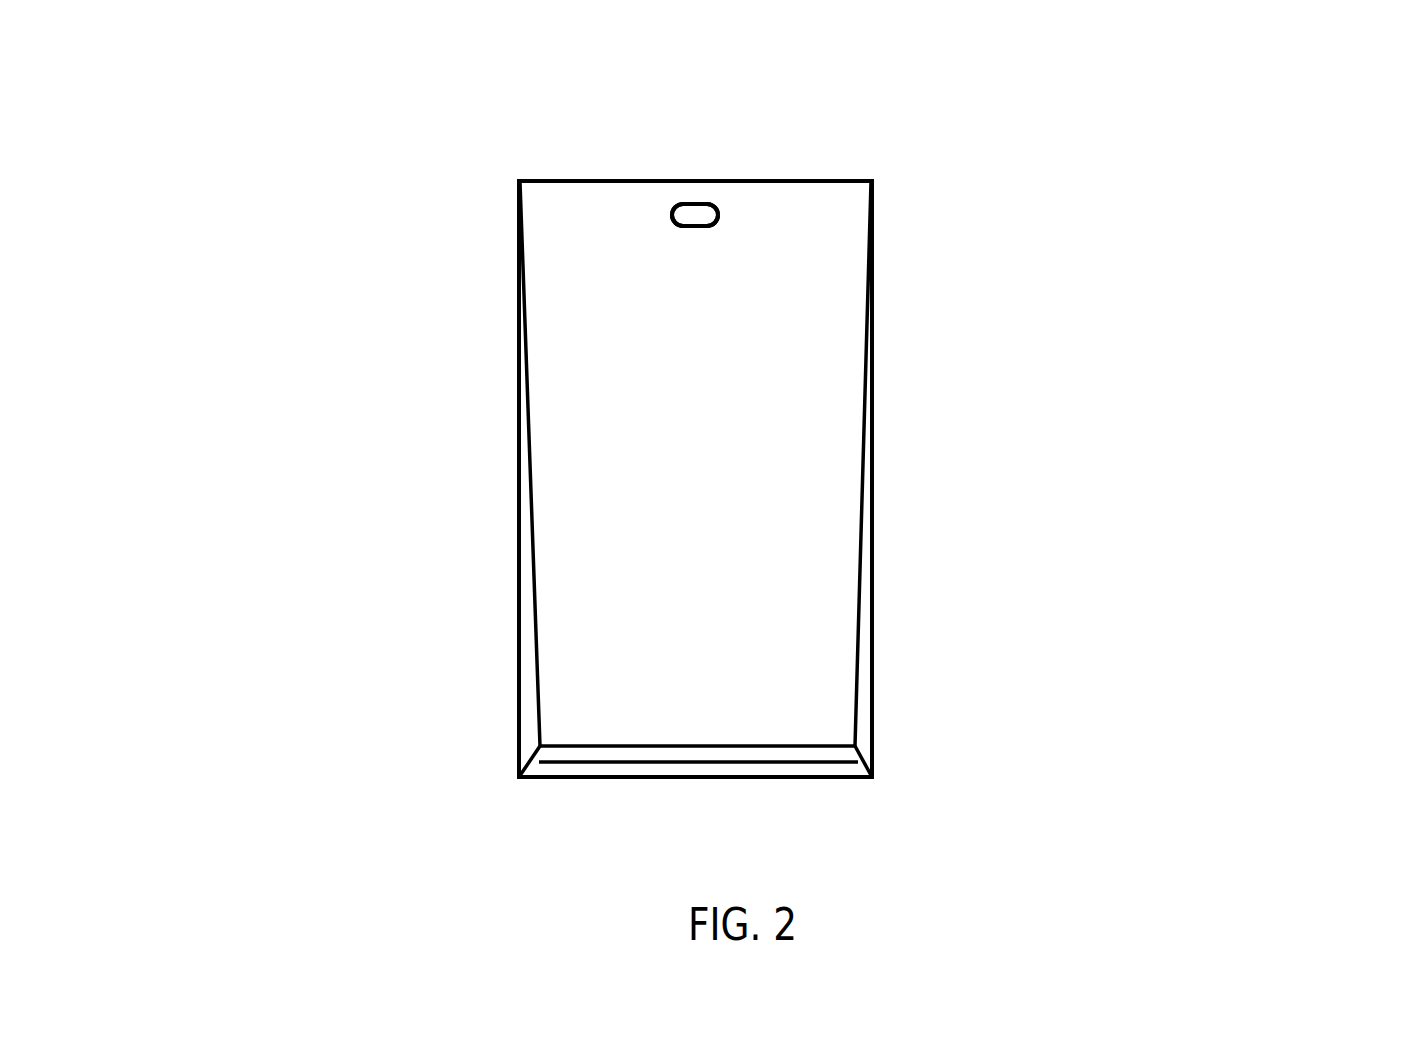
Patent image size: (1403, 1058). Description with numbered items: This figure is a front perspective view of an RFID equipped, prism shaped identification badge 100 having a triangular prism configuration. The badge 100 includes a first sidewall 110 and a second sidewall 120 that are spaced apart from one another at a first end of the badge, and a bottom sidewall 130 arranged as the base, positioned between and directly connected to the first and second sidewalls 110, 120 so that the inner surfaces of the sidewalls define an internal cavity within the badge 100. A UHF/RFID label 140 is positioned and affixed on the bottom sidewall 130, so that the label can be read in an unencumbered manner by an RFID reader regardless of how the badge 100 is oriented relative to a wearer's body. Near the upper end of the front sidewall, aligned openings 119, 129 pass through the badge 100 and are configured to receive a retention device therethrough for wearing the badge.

The RFID equipped, prism shaped identification badge 100 is at (241, 140).
The first sidewall 110 is at (532, 653).
The second sidewall 120 is at (826, 530).
The opening 119 is at (705, 212).
The opening 129 is at (695, 215).
The bottom sidewall 130 is at (803, 775).
The RFID label 140 is at (573, 762).